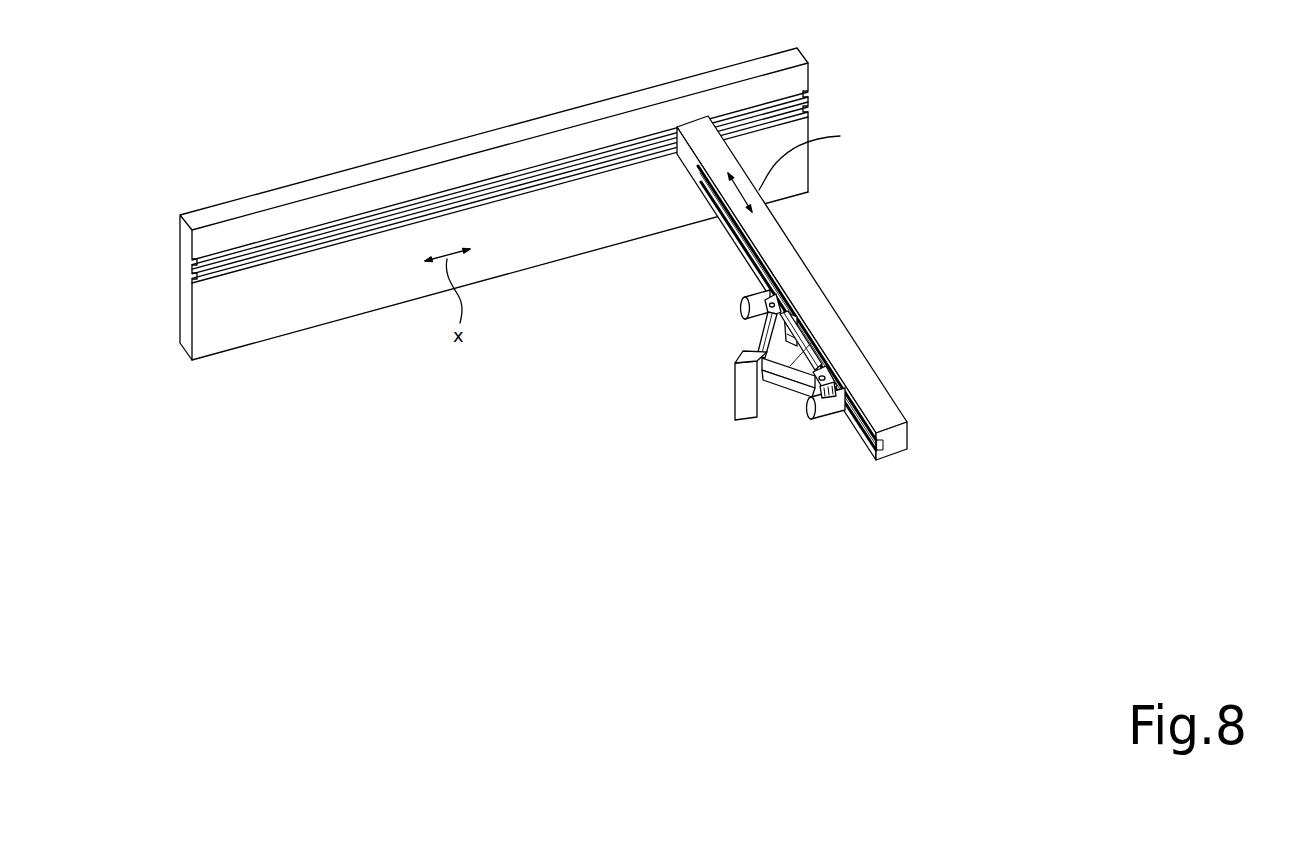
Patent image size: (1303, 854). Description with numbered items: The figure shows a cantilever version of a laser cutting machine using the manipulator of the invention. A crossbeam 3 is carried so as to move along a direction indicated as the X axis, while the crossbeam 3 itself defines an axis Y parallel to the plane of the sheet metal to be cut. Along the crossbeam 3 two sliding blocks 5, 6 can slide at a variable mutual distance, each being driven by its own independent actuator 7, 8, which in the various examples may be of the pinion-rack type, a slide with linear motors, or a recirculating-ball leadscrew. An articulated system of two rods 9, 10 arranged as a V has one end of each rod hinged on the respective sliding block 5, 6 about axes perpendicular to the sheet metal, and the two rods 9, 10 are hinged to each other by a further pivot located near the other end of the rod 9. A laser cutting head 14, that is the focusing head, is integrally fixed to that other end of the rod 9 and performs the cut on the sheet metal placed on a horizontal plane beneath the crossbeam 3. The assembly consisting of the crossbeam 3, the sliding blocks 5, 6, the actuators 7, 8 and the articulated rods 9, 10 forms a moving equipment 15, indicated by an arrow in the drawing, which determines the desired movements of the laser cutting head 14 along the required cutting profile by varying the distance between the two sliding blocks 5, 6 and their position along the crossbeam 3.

The crossbeam 3 is at (773, 238).
The sliding block 5 is at (792, 300).
The sliding block 6 is at (837, 378).
The actuator 7 is at (750, 296).
The actuator 8 is at (823, 411).
The rod 9 is at (763, 340).
The rod 10 is at (820, 337).
The laser cutting head 14 is at (740, 390).
The moving equipment 15 is at (785, 402).